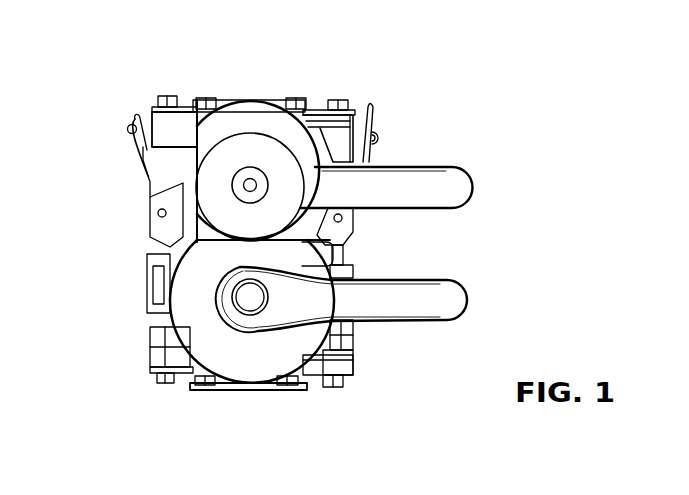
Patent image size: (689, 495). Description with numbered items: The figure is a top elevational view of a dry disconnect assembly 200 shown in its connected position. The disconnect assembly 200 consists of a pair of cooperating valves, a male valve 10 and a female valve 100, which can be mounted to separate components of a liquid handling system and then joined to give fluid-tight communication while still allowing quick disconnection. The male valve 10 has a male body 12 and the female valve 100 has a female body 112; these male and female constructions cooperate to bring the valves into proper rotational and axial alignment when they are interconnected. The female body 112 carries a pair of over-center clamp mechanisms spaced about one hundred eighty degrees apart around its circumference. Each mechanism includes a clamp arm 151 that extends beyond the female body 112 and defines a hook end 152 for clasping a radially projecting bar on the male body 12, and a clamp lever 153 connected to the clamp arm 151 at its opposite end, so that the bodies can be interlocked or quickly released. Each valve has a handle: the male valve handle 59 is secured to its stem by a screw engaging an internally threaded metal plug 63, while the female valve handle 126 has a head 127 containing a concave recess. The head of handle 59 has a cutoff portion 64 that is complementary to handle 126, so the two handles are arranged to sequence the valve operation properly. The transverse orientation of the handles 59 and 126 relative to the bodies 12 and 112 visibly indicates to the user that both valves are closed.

The male valve 10 is at (317, 391).
The male body 12 is at (187, 345).
The handle 59 is at (416, 322).
The metal plug 63 is at (249, 301).
The cutoff portion 64 is at (358, 264).
The female valve 100 is at (360, 92).
The female body 112 is at (155, 242).
The handle 126 is at (430, 178).
The head 127 is at (257, 145).
The clamp arm 151 is at (144, 190).
The hook end 152 is at (150, 312).
The clamp lever 153 is at (143, 163).
The disconnect assembly 200 is at (527, 95).